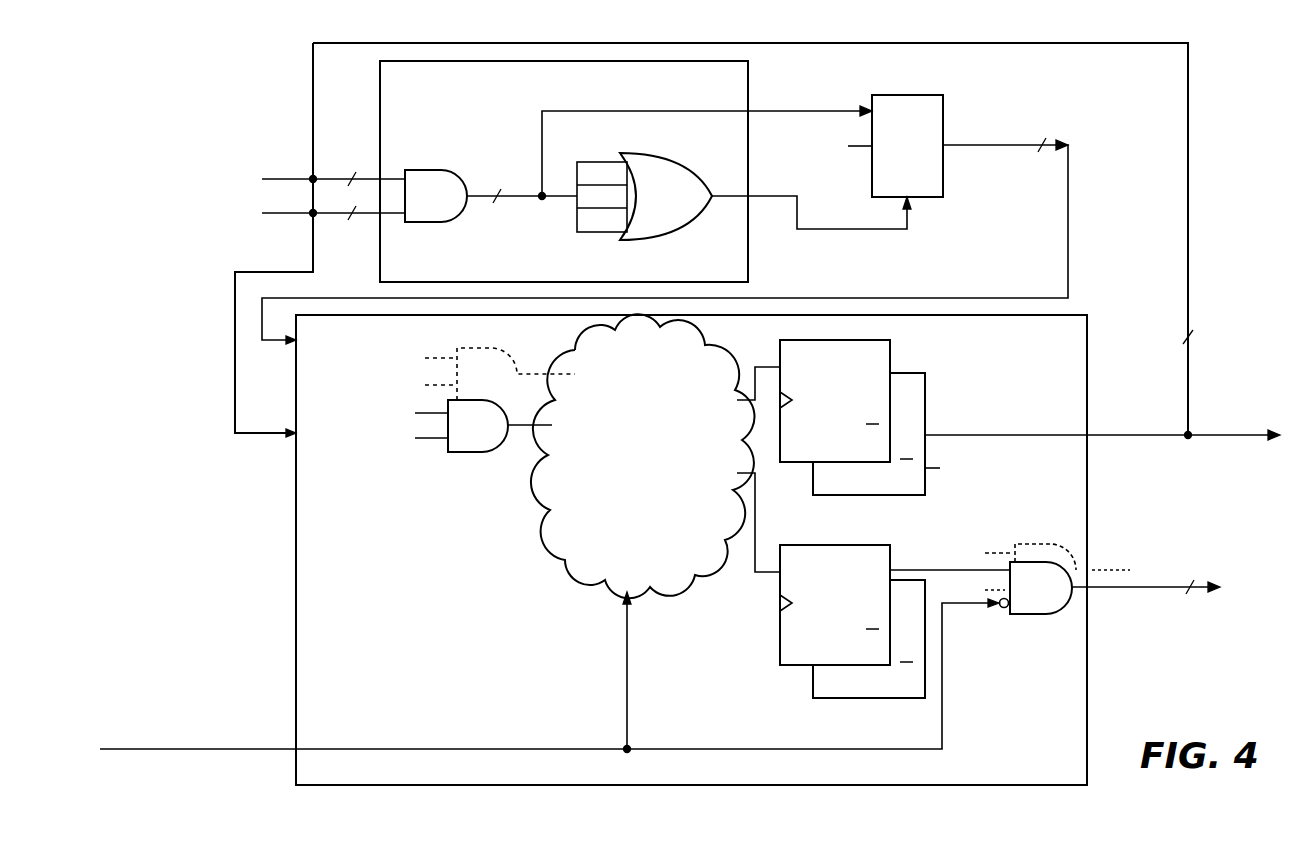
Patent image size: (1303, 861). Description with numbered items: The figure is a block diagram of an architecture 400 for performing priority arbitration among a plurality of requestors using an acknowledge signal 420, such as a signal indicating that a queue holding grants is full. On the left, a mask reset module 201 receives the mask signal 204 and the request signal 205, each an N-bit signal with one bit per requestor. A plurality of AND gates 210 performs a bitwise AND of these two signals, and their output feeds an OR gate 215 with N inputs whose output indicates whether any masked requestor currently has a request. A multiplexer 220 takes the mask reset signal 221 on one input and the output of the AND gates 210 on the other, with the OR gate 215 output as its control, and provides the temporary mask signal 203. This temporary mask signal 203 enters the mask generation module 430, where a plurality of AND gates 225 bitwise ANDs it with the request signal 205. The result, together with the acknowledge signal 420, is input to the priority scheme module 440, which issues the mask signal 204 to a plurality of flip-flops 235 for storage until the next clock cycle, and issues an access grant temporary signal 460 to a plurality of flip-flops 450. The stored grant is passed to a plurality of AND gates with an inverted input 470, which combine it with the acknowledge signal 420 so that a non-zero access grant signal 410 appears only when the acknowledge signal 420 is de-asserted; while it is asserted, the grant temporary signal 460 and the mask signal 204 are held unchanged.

The architecture 400 is at (252, 40).
The mask reset module 201 is at (748, 68).
The mask signal 204 is at (313, 126).
The request signal 205 is at (313, 266).
The plurality of AND gates 210 is at (420, 170).
The OR gate 215 is at (665, 168).
The multiplexer 220 is at (930, 198).
The mask reset signal 221 is at (852, 150).
The temporary mask signal 203 is at (1068, 222).
The mask generation module 430 is at (1087, 360).
The plurality of AND gates 225 is at (475, 452).
The priority scheme module 440 is at (548, 497).
The plurality of flip-flops 235 is at (780, 352).
The plurality of flip-flops 450 is at (780, 648).
The access grant temporary signal 460 is at (905, 570).
The plurality of AND gates with an inverted input 470 is at (1035, 614).
The access grant signal 410 is at (1143, 587).
The acknowledge signal 420 is at (272, 748).